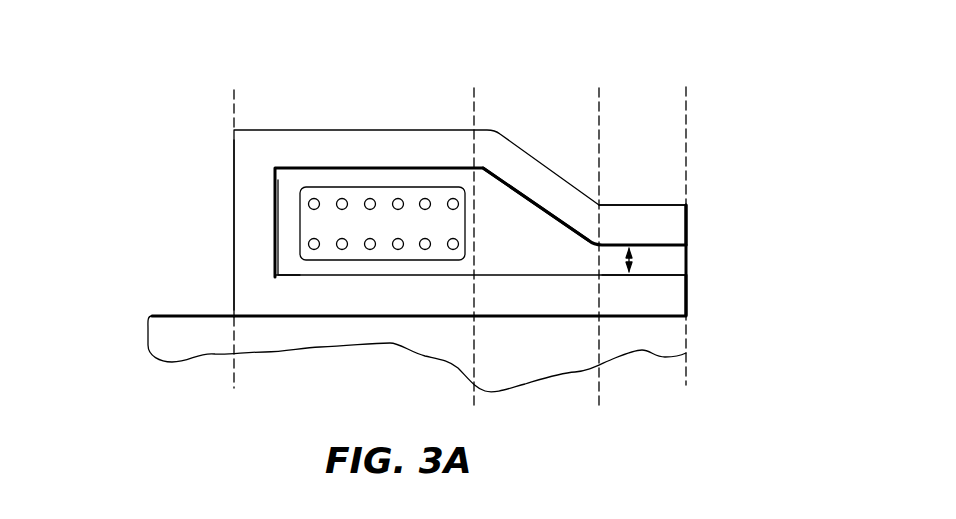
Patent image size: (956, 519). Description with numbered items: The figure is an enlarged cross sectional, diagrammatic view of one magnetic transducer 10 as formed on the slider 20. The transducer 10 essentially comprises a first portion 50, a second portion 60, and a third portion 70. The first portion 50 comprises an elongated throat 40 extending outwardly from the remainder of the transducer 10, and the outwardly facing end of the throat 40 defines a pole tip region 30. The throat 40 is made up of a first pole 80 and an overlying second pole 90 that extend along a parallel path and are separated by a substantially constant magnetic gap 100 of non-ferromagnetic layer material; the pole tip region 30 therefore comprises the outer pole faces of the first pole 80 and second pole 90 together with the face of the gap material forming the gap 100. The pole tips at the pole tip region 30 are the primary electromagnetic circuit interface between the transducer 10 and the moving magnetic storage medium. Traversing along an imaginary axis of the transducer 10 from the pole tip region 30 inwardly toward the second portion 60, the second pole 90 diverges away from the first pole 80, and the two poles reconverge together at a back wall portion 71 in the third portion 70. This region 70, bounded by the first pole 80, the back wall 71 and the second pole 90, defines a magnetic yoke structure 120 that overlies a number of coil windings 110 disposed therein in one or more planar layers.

The magnetic transducer 10 is at (207, 378).
The slider 20 is at (263, 342).
The pole tip region 30 is at (687, 222).
The throat 40 is at (645, 297).
The first portion 50 is at (635, 113).
The second portion 60 is at (528, 108).
The third portion 70 is at (333, 75).
The back wall portion 71 is at (234, 243).
The first pole 80 is at (487, 296).
The second pole 90 is at (437, 140).
The magnetic gap 100 is at (629, 262).
The coil windings 110 is at (348, 187).
The magnetic yoke structure 120 is at (292, 259).